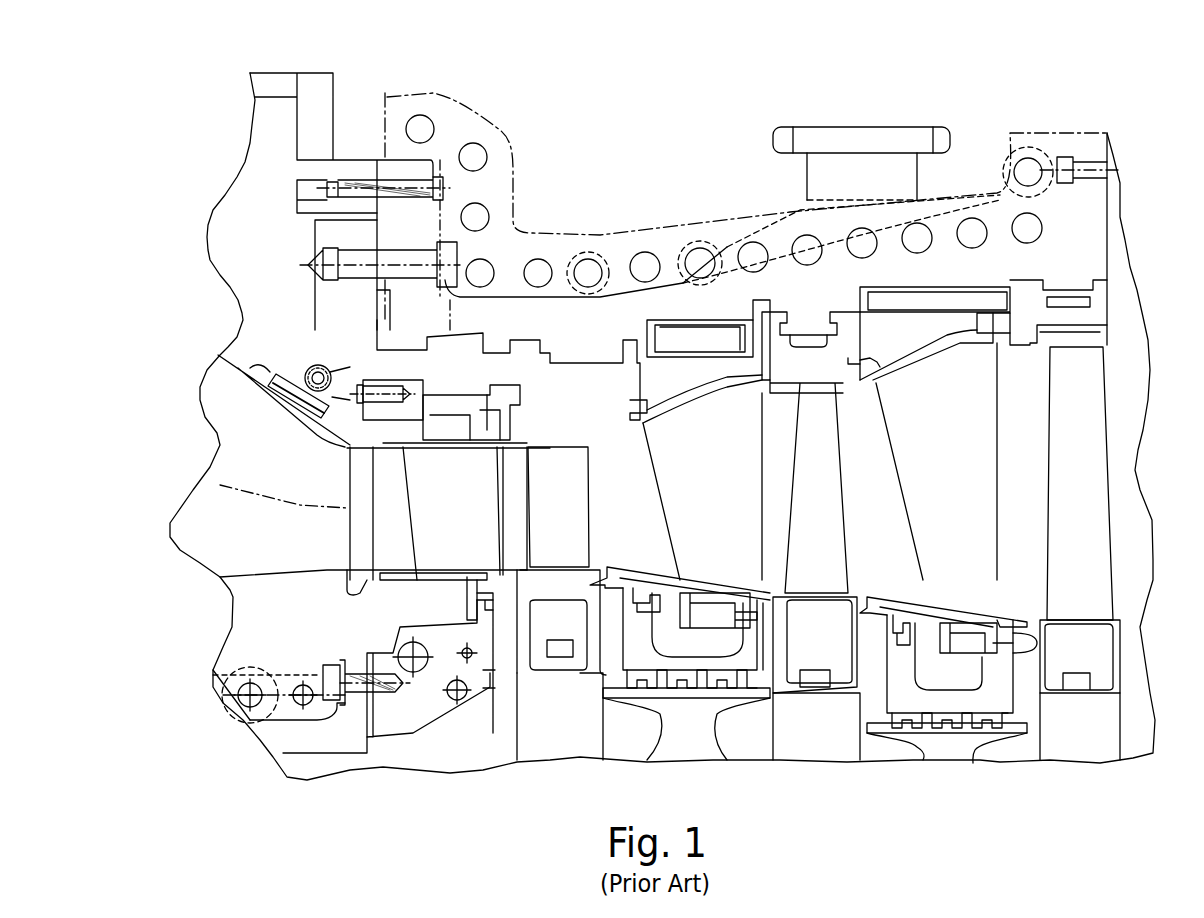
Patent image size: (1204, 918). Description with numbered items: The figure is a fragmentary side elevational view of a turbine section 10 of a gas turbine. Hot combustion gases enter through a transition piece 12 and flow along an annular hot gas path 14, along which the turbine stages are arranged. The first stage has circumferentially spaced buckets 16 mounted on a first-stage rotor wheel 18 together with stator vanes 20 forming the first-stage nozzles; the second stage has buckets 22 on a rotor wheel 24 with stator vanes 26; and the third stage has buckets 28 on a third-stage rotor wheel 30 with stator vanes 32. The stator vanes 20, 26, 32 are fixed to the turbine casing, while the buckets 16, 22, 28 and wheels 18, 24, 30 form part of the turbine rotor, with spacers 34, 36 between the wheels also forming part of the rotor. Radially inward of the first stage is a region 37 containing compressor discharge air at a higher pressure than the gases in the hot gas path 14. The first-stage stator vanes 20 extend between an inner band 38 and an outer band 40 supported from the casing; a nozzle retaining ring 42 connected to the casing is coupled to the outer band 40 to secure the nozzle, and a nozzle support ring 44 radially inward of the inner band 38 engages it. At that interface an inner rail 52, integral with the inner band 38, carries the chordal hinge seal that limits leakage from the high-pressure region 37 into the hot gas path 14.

The turbine section 10 is at (588, 168).
The transition piece 12 is at (232, 430).
The hot gas path 14 is at (618, 447).
The first-stage buckets 16 is at (580, 477).
The first-stage rotor wheel 18 is at (540, 740).
The first-stage stator vanes 20 is at (440, 480).
The second-stage buckets 22 is at (835, 483).
The second-stage rotor wheel 24 is at (818, 743).
The second-stage stator vanes 26 is at (720, 465).
The third-stage buckets 28 is at (1103, 478).
The third-stage rotor wheel 30 is at (1080, 752).
The third-stage stator vanes 32 is at (960, 461).
The spacer 34 is at (690, 747).
The spacer 36 is at (950, 753).
The compressor discharge air region 37 is at (338, 638).
The inner band 38 is at (443, 567).
The outer band 40 is at (467, 447).
The nozzle retaining ring 42 is at (407, 388).
The nozzle support ring 44 is at (400, 727).
The inner rail 52 is at (473, 582).